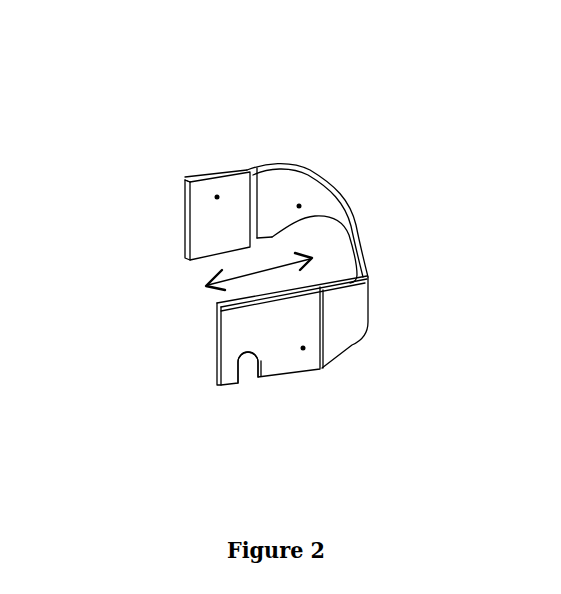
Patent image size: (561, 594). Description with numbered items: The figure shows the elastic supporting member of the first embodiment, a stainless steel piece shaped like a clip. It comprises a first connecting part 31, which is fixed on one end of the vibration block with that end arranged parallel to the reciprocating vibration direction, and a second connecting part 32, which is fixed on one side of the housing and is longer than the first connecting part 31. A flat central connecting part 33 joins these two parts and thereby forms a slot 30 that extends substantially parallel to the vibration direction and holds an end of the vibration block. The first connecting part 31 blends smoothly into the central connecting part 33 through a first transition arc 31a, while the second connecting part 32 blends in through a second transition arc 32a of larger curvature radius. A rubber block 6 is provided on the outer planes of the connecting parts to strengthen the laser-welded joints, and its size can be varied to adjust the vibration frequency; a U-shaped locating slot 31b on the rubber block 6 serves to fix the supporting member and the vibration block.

The slot 30 is at (222, 268).
The first connecting part 31 is at (218, 315).
The first transition arc 31a is at (369, 275).
The locating slot 31b is at (249, 372).
The second connecting part 32 is at (213, 177).
The second transition arc 32a is at (299, 206).
The central connecting part 33 is at (363, 228).
The rubber block 6 is at (217, 197).